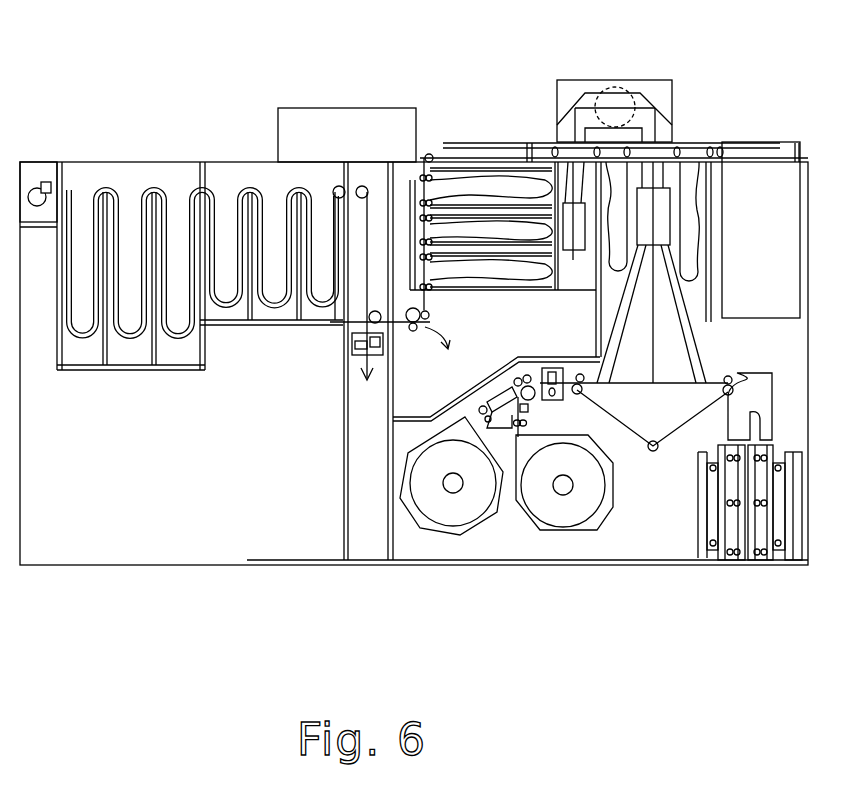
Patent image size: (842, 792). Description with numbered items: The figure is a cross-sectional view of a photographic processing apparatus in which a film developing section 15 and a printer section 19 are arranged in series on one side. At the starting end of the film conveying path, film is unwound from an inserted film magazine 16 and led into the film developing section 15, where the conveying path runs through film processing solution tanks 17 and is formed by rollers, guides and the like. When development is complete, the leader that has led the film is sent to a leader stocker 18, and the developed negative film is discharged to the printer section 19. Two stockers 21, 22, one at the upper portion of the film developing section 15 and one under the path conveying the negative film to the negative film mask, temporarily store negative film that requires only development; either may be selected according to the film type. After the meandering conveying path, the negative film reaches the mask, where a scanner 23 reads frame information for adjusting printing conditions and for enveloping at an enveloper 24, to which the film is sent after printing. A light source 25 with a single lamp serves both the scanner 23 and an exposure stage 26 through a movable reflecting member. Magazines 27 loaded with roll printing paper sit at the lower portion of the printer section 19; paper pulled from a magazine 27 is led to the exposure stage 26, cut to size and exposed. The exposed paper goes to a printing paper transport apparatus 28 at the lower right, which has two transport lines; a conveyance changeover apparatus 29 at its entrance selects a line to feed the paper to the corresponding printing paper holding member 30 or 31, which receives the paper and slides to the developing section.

The film developing section 15 is at (153, 146).
The film magazine 16 is at (41, 186).
The film processing solution tanks 17 is at (78, 352).
The leader stocker 18 is at (367, 540).
The printer section 19 is at (449, 120).
The stocker 21 is at (335, 108).
The stocker 22 is at (410, 385).
The scanner 23 is at (555, 207).
The enveloper 24 is at (735, 142).
The light source 25 is at (630, 83).
The exposure stage 26 is at (657, 455).
The magazines 27 is at (460, 532).
The printing paper transport apparatus 28 is at (777, 570).
The conveyance changeover apparatus 29 is at (760, 383).
The printing paper holding member 30 is at (772, 560).
The printing paper holding member 31 is at (740, 560).